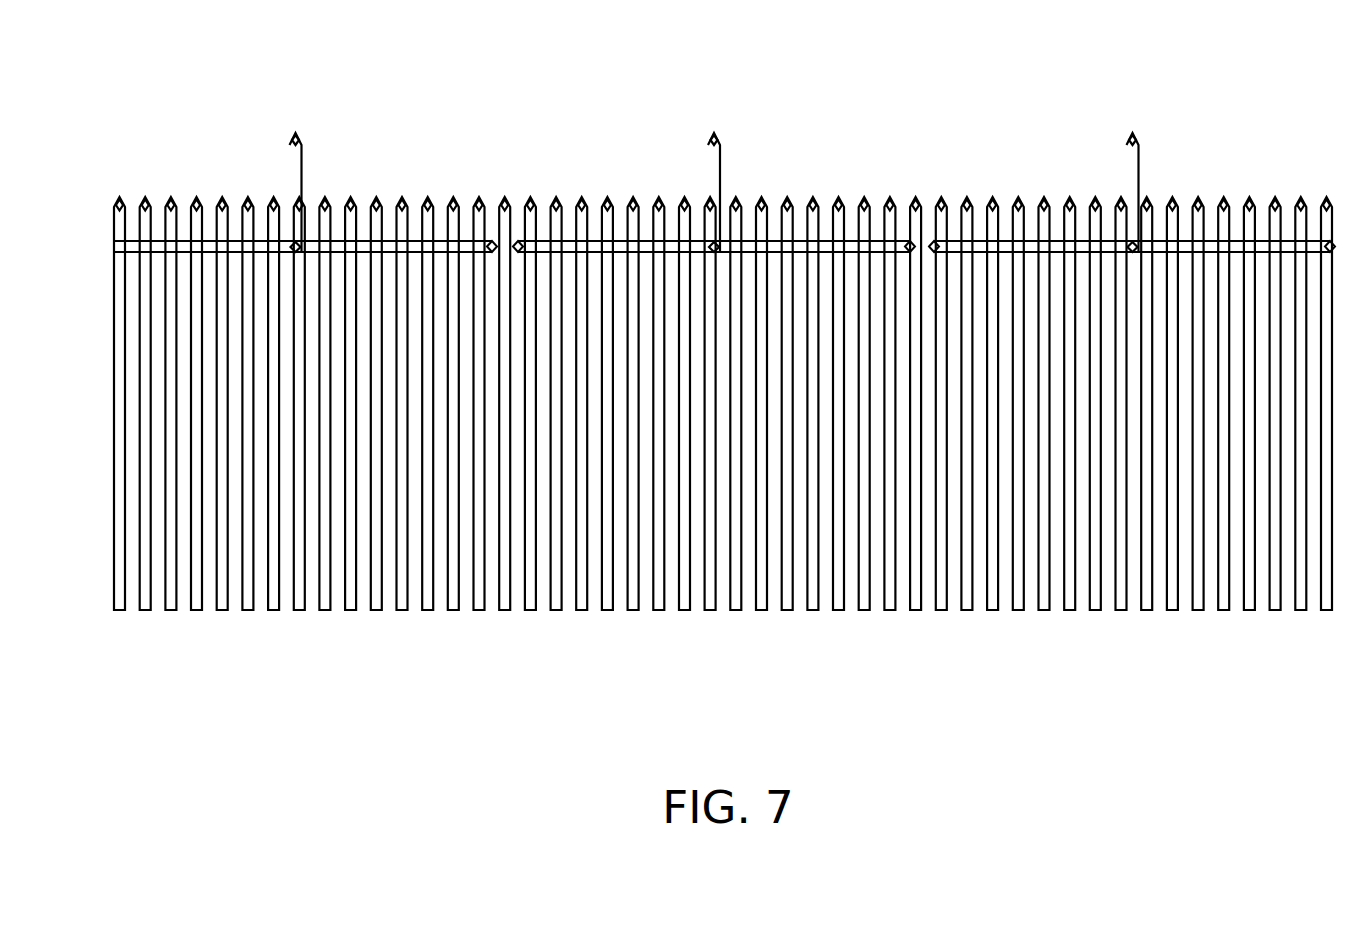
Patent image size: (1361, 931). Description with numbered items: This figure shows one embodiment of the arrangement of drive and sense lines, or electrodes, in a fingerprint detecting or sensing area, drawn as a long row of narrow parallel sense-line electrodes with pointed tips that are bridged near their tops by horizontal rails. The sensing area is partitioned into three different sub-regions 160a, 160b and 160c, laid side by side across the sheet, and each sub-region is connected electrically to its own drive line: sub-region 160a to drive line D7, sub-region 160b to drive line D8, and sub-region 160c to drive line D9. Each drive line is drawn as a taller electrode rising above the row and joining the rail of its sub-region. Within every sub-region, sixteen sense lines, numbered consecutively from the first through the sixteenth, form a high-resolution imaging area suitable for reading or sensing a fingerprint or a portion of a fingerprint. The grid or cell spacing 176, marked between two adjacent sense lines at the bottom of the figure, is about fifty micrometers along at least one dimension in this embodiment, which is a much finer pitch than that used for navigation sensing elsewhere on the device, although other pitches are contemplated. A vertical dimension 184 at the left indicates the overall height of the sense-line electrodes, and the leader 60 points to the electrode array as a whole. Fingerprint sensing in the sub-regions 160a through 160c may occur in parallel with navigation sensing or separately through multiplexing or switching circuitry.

The fence panel 60 is at (348, 638).
The sub-region 160a is at (113, 42).
The sub-region 160b is at (500, 52).
The sub-region 160c is at (912, 52).
The cell spacing 176 is at (633, 613).
The picket height 184 is at (92, 610).
The drive line D7 is at (296, 164).
The drive line D8 is at (714, 164).
The drive line D9 is at (1131, 164).